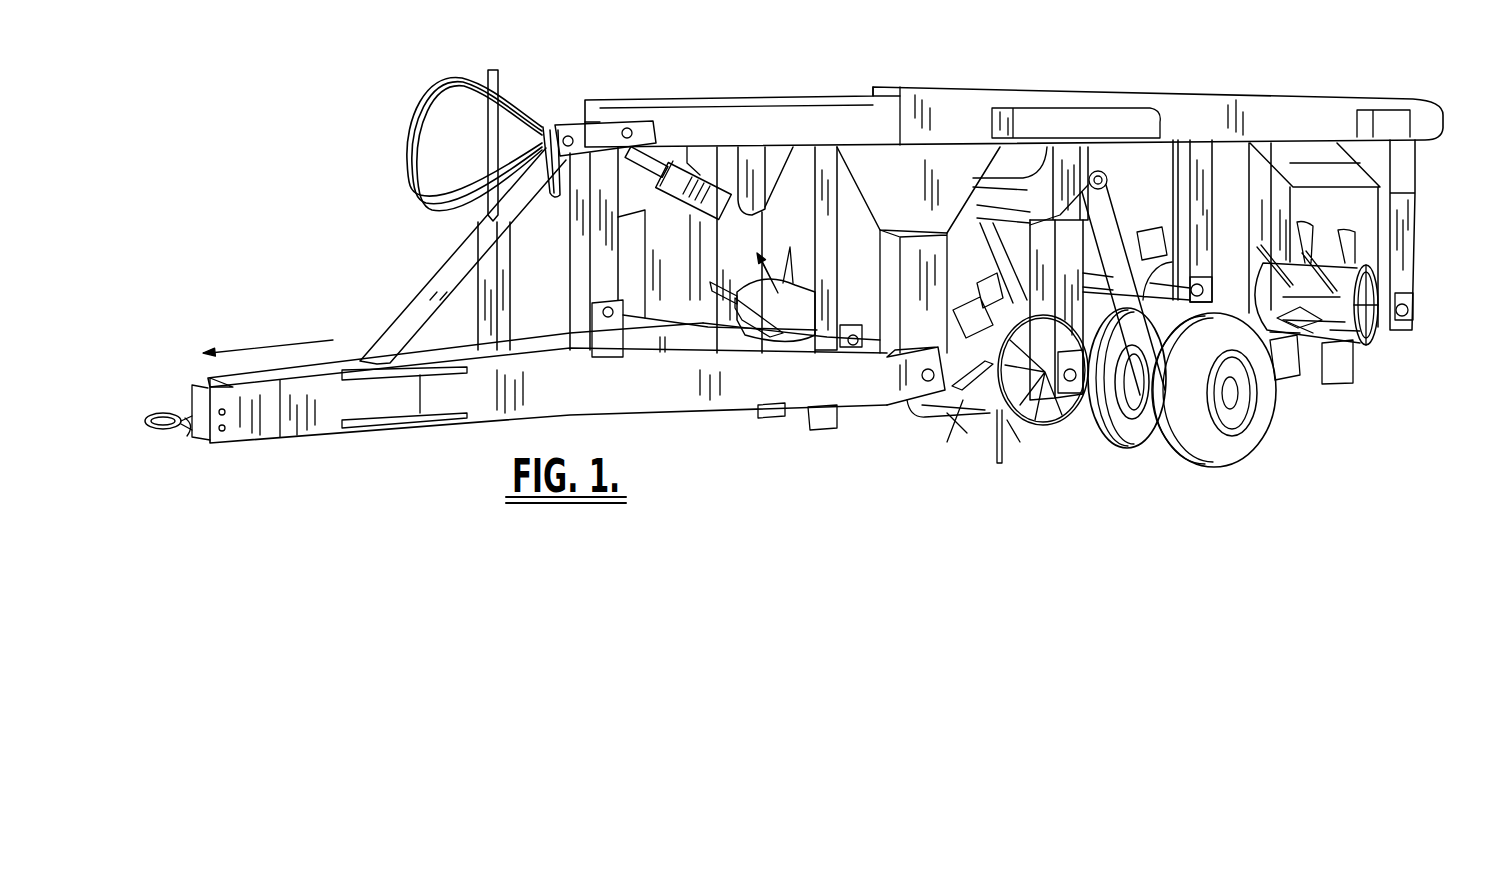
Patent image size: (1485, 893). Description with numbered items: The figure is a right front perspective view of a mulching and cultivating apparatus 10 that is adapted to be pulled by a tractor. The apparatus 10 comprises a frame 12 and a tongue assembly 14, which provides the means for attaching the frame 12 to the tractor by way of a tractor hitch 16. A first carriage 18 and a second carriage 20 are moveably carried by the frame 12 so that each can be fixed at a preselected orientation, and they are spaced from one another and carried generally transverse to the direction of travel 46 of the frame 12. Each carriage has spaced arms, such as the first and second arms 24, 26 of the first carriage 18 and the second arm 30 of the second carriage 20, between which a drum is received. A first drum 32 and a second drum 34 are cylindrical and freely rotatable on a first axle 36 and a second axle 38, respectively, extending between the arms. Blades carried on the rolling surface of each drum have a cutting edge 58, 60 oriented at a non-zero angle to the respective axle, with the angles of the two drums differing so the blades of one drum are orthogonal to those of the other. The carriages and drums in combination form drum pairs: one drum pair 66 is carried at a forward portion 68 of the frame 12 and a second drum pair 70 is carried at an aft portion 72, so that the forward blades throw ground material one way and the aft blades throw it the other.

The mulching and cultivating apparatus 10 is at (1315, 55).
The frame 12 is at (1340, 108).
The tongue assembly 14 is at (379, 156).
The tractor hitch 16 is at (187, 438).
The first carriage 18 is at (1075, 152).
The second carriage 20 is at (808, 166).
The first arm 24 is at (1085, 257).
The second arm 26 is at (851, 241).
The second arm 30 is at (752, 257).
The first drum 32 is at (752, 327).
The second drum 34 is at (932, 416).
The first axle 36 is at (1071, 382).
The second axle 38 is at (855, 348).
The direction of travel 46 is at (287, 337).
The cutting edge 58 is at (1000, 462).
The cutting edge 60 is at (788, 250).
The one drum pair 66 is at (1018, 460).
The forward portion 68 is at (922, 78).
The second drum pair 70 is at (1370, 362).
The aft portion 72 is at (1417, 98).